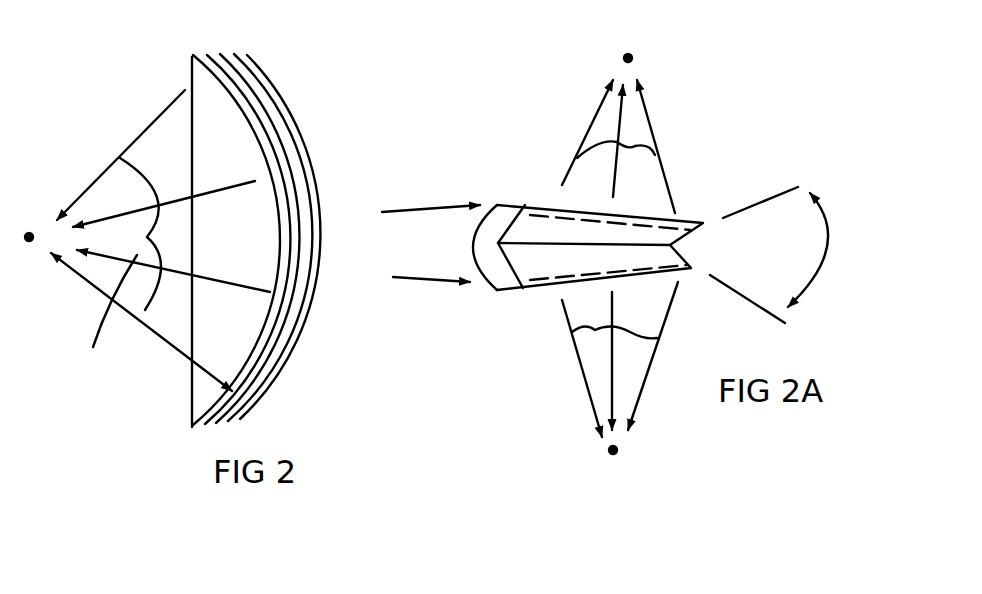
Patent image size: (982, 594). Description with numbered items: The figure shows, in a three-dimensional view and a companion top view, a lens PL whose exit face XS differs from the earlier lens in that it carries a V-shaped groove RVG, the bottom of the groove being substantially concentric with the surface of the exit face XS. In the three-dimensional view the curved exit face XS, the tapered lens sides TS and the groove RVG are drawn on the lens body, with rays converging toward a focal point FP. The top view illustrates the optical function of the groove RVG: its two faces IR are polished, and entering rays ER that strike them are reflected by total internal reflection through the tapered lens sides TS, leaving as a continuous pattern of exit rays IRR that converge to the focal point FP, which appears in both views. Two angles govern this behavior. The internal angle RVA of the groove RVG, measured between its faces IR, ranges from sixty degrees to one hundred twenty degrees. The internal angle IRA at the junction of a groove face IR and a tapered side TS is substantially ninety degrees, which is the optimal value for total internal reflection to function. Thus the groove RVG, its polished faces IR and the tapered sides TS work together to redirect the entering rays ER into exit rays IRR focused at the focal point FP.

In FIG. 2, the lens PL is at (177, 413).
In FIG. 2, the tapered lens sides TS is at (217, 120).
In FIG. 2A, the tapered lens sides TS is at (515, 205).
In FIG. 2, the exit face XS is at (293, 142).
In FIG. 2, the V-shaped groove RVG is at (277, 358).
In FIG. 2, the focal point FP is at (28, 250).
In FIG. 2A, the focal point FP is at (619, 254).
In FIG. 2A, the faces of the V-shaped groove IR is at (693, 233).
In FIG. 2A, the internal angle at the junction of the groove faces and tapered sides IRA is at (504, 205).
In FIG. 2A, the entering rays ER is at (423, 268).
In FIG. 2A, the exit rays IRR is at (635, 146).
In FIG. 2A, the internal angle of the V-shaped groove RVA is at (800, 255).